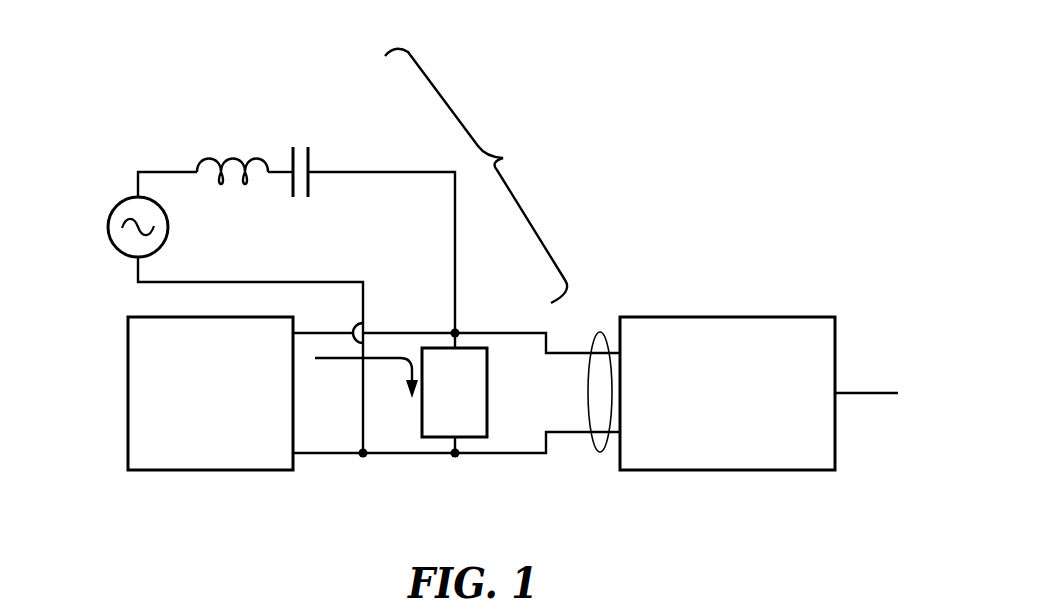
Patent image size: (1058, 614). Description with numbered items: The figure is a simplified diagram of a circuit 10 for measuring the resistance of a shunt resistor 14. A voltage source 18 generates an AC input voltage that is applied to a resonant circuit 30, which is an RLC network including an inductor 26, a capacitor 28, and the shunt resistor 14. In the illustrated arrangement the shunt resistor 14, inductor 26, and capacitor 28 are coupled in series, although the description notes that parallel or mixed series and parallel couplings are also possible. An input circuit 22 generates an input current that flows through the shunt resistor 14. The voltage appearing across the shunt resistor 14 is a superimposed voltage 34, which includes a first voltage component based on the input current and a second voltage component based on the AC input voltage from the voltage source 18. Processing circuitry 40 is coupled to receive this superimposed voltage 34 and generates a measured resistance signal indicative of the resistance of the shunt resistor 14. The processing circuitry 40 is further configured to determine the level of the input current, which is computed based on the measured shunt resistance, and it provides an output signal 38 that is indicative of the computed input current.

The circuit 10 is at (755, 52).
The shunt resistor 14 is at (467, 421).
The voltage source 18 is at (118, 205).
The input circuit 22 is at (225, 453).
The inductor 26 is at (213, 160).
The capacitor 28 is at (313, 167).
The resonant circuit 30 is at (476, 176).
The superimposed voltage Vr(t) 34 is at (600, 452).
The output signal Io 38 is at (867, 392).
The processing circuitry 40 is at (713, 452).